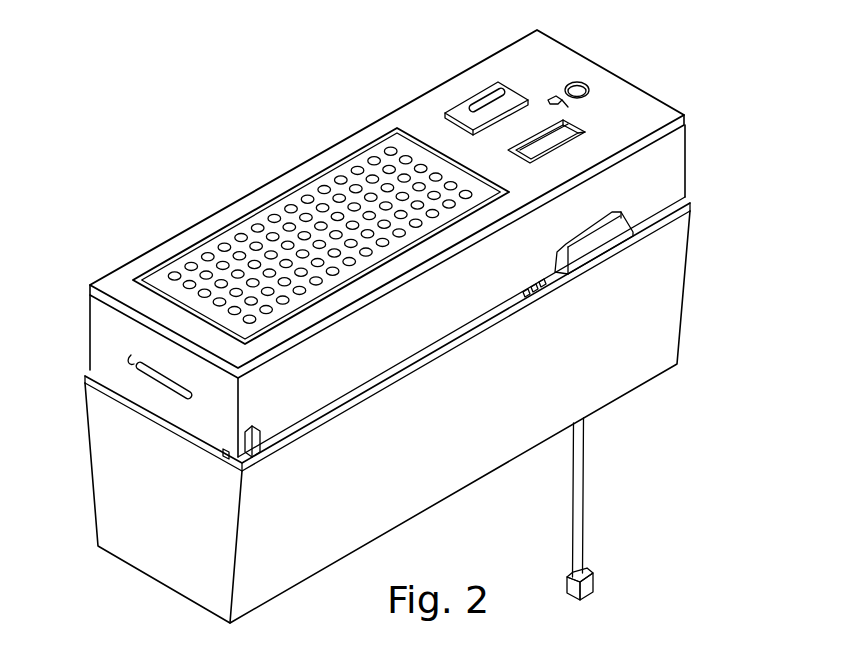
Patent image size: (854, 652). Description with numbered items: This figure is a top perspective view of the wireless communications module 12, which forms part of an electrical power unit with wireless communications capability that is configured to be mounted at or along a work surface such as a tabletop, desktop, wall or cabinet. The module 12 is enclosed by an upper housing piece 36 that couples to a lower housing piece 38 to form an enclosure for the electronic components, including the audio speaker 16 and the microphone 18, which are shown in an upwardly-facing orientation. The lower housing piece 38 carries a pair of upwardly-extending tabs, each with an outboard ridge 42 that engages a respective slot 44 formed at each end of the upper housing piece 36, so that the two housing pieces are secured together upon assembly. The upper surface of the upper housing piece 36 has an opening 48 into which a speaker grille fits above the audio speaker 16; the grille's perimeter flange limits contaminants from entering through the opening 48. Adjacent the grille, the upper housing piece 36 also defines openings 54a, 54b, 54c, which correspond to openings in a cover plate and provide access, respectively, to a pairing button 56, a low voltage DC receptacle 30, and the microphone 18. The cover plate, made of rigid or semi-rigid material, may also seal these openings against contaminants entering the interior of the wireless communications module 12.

The wireless communications module 12 is at (186, 117).
The audio speaker 16 is at (265, 222).
The microphone 18 is at (585, 498).
The low voltage DC receptacle 30 is at (588, 125).
The upper housing piece 36 is at (687, 155).
The lower housing piece 38 is at (688, 240).
The outboard ridge 42 is at (165, 385).
The slot 44 is at (130, 352).
The opening 48 is at (340, 153).
The opening 54a is at (508, 79).
The opening 54b is at (522, 138).
The opening 54c is at (573, 80).
The pairing button 56 is at (467, 101).